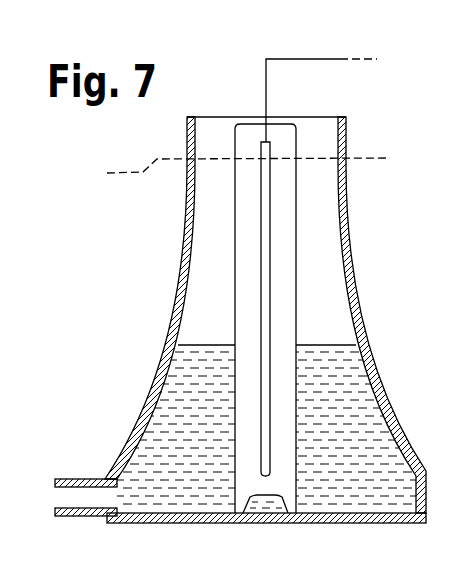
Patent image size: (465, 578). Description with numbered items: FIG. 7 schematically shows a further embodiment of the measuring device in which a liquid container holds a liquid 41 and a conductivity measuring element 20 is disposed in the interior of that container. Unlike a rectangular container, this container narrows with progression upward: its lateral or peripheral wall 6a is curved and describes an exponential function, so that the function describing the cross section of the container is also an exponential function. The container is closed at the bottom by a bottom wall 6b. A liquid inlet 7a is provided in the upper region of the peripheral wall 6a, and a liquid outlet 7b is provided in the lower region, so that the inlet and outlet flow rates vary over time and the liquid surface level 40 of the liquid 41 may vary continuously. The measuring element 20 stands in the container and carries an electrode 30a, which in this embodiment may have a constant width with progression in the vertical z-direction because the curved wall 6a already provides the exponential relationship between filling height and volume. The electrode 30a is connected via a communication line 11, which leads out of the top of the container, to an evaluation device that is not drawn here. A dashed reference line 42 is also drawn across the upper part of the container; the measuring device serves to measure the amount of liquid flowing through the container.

The communication line 11 is at (306, 59).
The liquid inlet 7a is at (213, 133).
The reference level line 42 is at (234, 173).
The electrode 30a is at (267, 233).
The measuring element 20 is at (290, 280).
The liquid surface level 40 is at (320, 345).
The liquid 41 is at (173, 411).
The peripheral wall 6a is at (385, 420).
The liquid outlet 7b is at (65, 498).
The bottom wall 6b is at (351, 521).